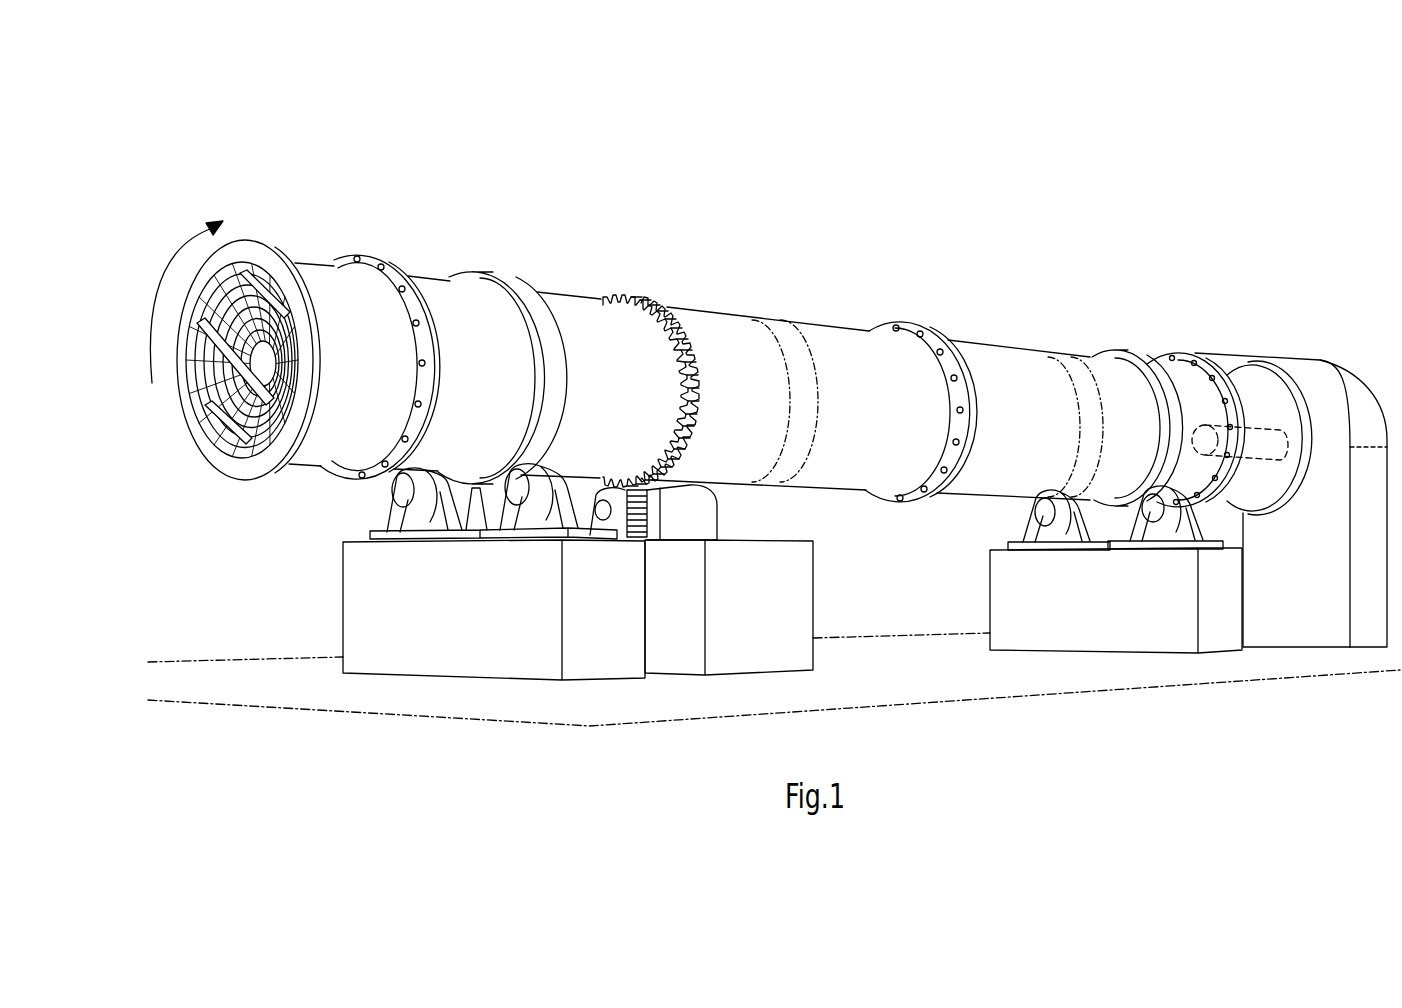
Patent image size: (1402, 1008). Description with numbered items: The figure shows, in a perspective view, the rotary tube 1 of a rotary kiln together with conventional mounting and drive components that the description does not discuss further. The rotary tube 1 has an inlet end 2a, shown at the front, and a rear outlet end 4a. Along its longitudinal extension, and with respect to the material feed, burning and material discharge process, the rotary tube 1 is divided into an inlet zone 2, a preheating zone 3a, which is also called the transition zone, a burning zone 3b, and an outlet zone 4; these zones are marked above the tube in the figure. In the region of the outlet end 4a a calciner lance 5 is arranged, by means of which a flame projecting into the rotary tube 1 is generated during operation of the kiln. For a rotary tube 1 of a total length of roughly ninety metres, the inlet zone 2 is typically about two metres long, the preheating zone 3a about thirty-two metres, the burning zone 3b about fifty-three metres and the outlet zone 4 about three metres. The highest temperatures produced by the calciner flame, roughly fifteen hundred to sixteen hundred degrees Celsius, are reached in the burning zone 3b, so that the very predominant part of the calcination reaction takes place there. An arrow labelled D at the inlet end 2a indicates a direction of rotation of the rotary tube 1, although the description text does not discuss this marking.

The rotary tube 1 is at (1098, 190).
The inlet zone 2 is at (332, 207).
The inlet end 2a is at (196, 447).
The preheating zone 3a is at (705, 251).
The burning zone 3b is at (1178, 306).
The outlet zone 4 is at (1313, 324).
The outlet end 4a is at (1346, 376).
The calciner lance 5 is at (1252, 453).
The direction of rotation D is at (181, 262).